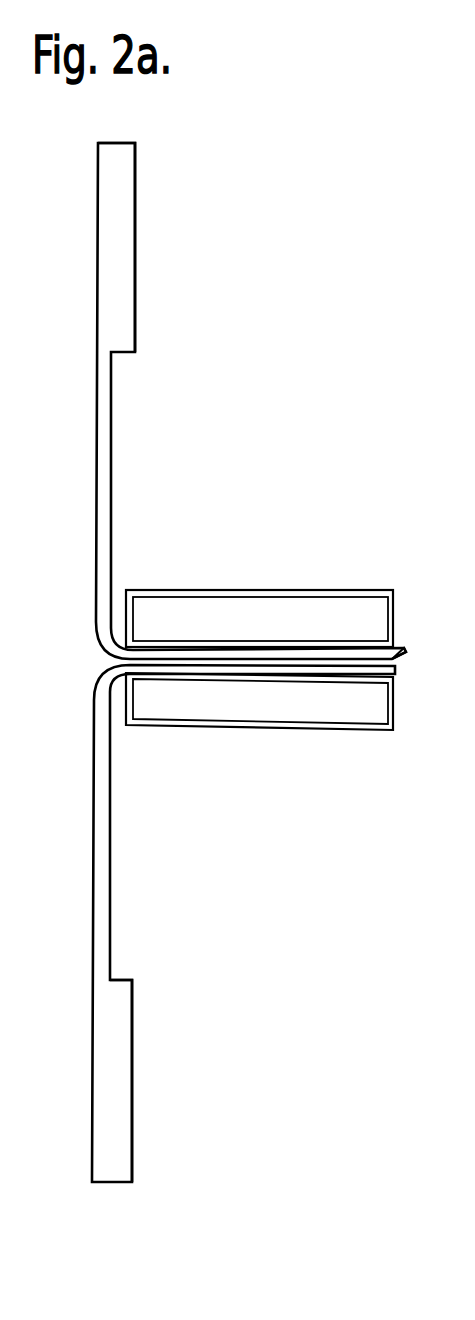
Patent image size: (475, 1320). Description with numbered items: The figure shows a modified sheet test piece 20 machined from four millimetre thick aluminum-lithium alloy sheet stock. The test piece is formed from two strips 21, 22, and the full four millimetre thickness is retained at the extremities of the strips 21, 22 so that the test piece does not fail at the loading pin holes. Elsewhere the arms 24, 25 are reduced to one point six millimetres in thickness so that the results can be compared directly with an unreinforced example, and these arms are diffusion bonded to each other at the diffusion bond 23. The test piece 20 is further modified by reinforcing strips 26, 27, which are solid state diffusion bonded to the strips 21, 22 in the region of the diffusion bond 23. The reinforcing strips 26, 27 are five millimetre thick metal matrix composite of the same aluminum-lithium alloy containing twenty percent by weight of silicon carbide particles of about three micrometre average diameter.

The sheet test piece 20 is at (283, 662).
The strip 21 is at (172, 652).
The strip 22 is at (160, 668).
The diffusion bond 23 is at (394, 667).
The arm 24 is at (97, 411).
The arm 25 is at (97, 921).
The reinforcing strip 26 is at (331, 607).
The reinforcing strip 27 is at (343, 715).